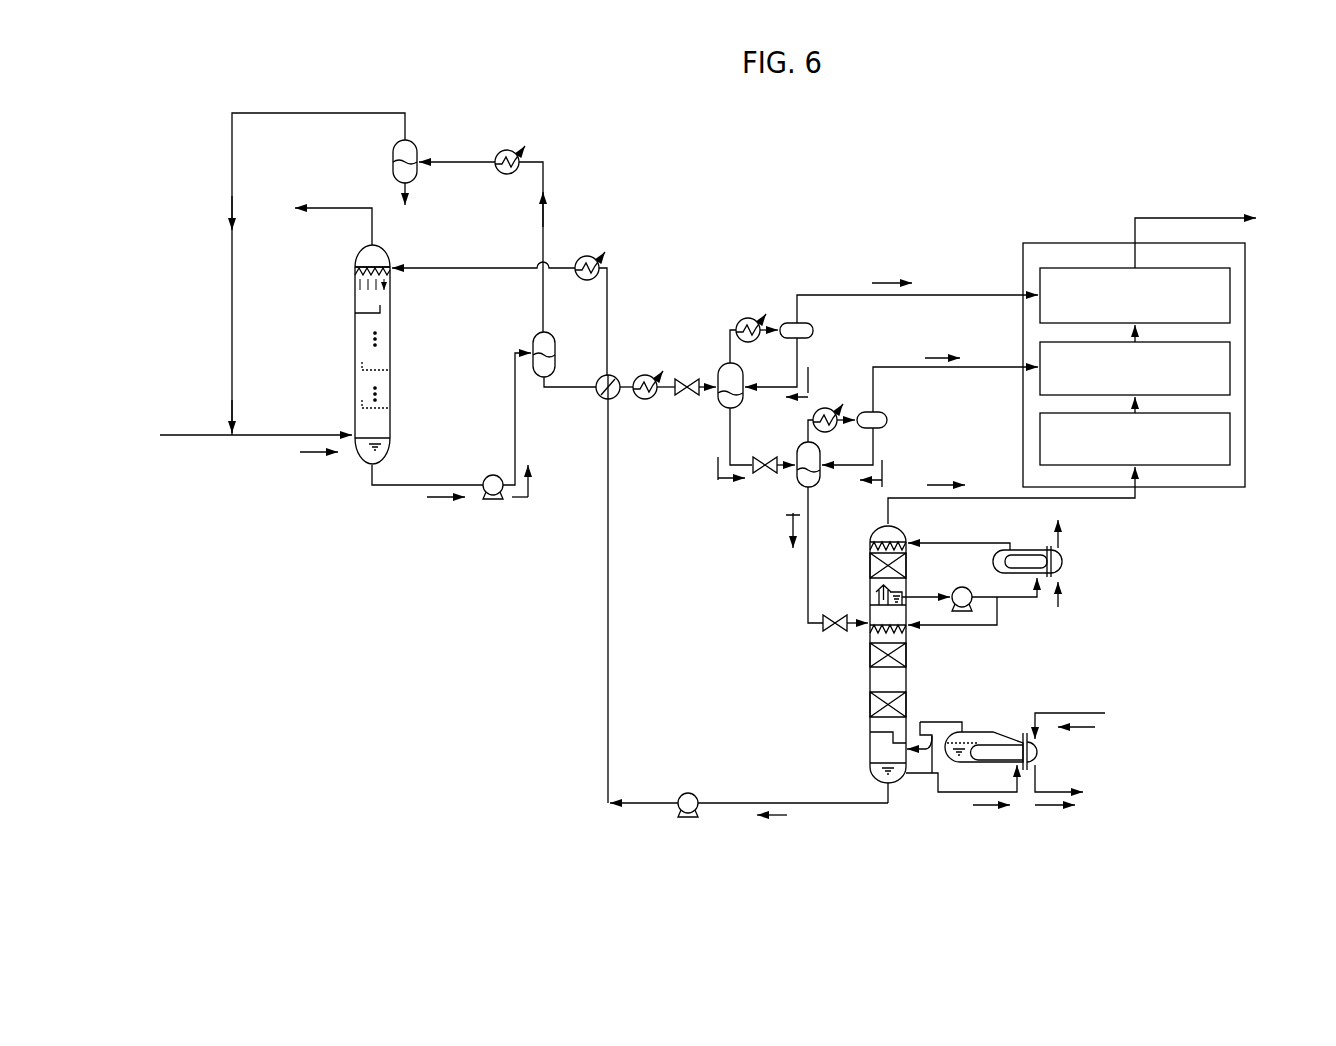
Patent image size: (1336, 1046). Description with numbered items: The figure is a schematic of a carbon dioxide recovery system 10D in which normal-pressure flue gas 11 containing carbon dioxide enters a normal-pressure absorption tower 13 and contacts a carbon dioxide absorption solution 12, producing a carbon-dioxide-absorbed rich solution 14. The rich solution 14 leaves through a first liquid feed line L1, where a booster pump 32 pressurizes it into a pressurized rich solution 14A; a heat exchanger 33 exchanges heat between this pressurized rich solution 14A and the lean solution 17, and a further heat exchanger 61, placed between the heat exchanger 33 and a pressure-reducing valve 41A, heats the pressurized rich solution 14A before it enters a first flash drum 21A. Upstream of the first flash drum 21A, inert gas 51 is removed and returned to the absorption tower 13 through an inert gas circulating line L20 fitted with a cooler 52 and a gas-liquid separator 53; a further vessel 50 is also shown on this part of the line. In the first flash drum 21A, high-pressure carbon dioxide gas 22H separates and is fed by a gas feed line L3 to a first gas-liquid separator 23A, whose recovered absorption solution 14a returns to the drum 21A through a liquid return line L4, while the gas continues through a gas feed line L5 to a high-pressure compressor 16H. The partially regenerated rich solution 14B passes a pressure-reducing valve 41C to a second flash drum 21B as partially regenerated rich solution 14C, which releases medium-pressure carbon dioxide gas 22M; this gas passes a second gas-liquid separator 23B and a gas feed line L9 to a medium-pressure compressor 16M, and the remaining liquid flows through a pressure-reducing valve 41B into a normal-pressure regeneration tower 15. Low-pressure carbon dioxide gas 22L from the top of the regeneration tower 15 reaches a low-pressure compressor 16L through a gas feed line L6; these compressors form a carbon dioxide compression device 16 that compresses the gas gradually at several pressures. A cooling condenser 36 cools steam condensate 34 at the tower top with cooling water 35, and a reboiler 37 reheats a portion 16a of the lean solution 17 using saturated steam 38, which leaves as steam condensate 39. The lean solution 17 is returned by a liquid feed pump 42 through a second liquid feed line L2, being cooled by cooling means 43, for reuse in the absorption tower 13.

The carbon dioxide recovery system 10D is at (800, 190).
The normal-pressure flue gas 11 is at (318, 455).
The carbon dioxide absorption solution 12 is at (356, 270).
The normal-pressure absorption tower 13 is at (340, 335).
The rich solution 14 is at (441, 499).
The pressurized rich solution 14A is at (520, 500).
The partially regenerated rich solution 14B is at (718, 477).
The partially regenerated rich solution 14C is at (790, 530).
The absorption solution 14a is at (810, 390).
The normal-pressure regeneration tower 15 is at (911, 668).
The carbon dioxide compression device 16 is at (1164, 357).
The high-pressure compressor 16H is at (1245, 295).
The medium-pressure compressor 16M is at (1245, 367).
The low-pressure compressor 16L is at (1245, 439).
The portion of lean solution 16a is at (987, 805).
The lean solution 17 is at (772, 815).
The first flash drum 21A is at (716, 360).
The second flash drum 21B is at (796, 487).
The high-pressure carbon dioxide gas 22H is at (880, 283).
The medium-pressure carbon dioxide gas 22M is at (932, 357).
The low-pressure carbon dioxide gas 22L is at (931, 485).
The first gas-liquid separator 23A is at (813, 333).
The second gas-liquid separator 23B is at (887, 420).
The booster pump 32 is at (486, 476).
The heat exchanger 33 is at (596, 377).
The steam condensate 34 is at (904, 597).
The cooling water 35 is at (1058, 597).
The cooling condenser 36 is at (1031, 549).
The reboiler 37 is at (993, 721).
The saturated steam 38 is at (1084, 727).
The steam condensate 39 is at (1047, 805).
The pressure-reducing valve 41A is at (684, 378).
The pressure-reducing valve 41B is at (835, 614).
The pressure-reducing valve 41C is at (764, 473).
The liquid feed pump 42 is at (686, 818).
The cooling means 43 is at (587, 282).
The gas-liquid separator 50 is at (533, 344).
The inert gas 51 is at (545, 213).
The cooler 52 is at (504, 176).
The gas-liquid separator 53 is at (418, 166).
The heat exchanger 61 is at (651, 401).
The first liquid feed line L1 is at (390, 487).
The second liquid feed line L2 is at (730, 803).
The gas feed line L3 is at (733, 327).
The liquid return line L4 is at (768, 390).
The gas feed line L5 is at (818, 293).
The gas feed line L6 is at (937, 512).
The gas feed line L9 is at (978, 367).
The inert gas circulating line L20 is at (234, 141).